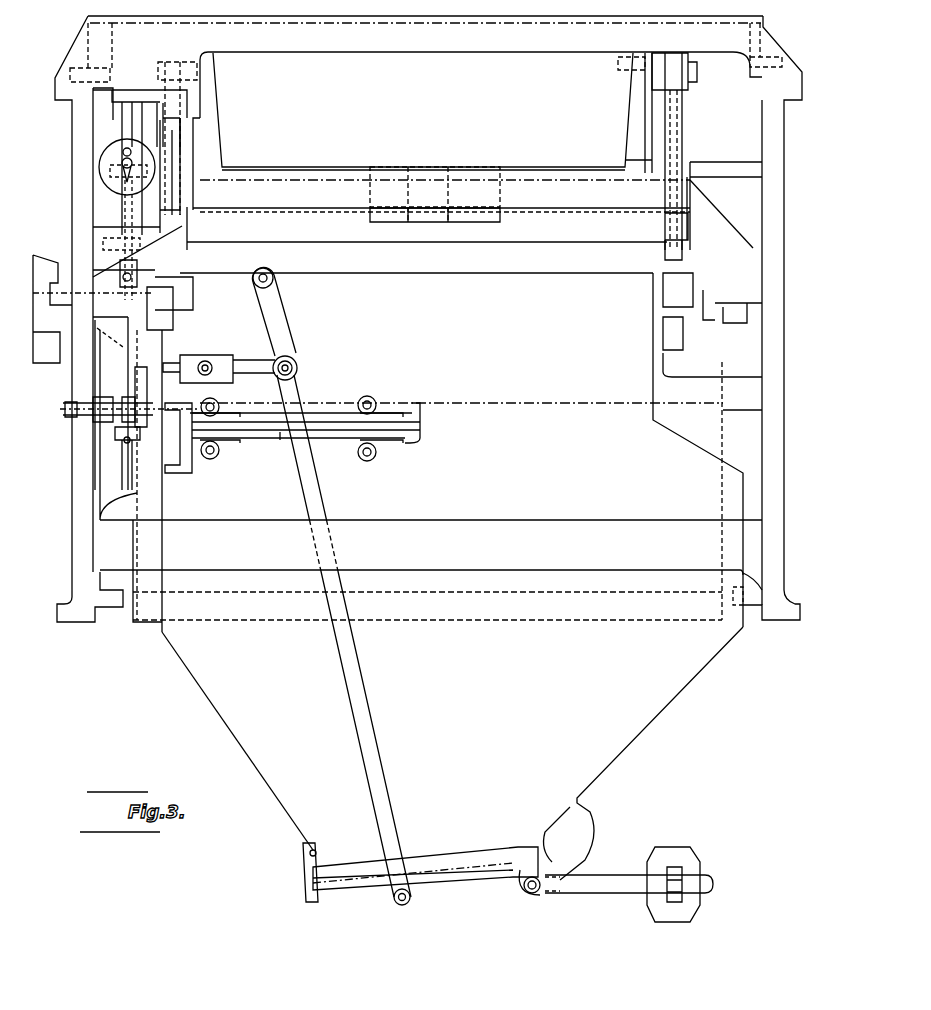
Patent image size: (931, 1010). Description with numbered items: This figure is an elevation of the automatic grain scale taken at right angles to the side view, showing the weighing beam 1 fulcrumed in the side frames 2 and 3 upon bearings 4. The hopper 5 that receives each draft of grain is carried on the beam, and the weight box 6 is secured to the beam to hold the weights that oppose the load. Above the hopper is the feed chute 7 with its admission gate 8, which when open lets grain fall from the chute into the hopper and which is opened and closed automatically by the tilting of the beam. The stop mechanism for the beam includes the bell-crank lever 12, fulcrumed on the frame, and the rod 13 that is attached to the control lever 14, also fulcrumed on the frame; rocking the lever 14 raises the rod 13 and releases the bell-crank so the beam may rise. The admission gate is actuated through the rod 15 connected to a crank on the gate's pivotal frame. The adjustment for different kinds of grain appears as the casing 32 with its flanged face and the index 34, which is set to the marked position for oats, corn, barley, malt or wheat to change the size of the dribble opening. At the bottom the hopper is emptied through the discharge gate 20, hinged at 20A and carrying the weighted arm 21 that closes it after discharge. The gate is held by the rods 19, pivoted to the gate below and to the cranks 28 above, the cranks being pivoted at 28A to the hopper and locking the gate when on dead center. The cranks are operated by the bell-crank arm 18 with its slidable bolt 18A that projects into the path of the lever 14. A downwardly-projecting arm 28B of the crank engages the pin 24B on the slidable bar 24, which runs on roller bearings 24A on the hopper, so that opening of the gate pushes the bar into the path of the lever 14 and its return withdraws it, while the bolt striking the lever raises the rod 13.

The weighing beam 1 is at (697, 267).
The side frame 2 is at (77, 493).
The side frame 3 is at (784, 563).
The bearings 4 is at (692, 355).
The hopper 5 is at (640, 724).
The weight box 6 is at (145, 610).
The feed chute 7 is at (432, 113).
The admission gate 8 is at (467, 194).
The bell-crank lever 12 is at (113, 128).
The rod 13 is at (125, 210).
The control lever 14 is at (148, 390).
The rod 15 is at (203, 100).
The bell-crank arm 18 is at (170, 368).
The slidable bolt 18A is at (210, 365).
The rods 19 is at (380, 750).
The discharge gate 20 is at (468, 873).
The hinge 20A is at (528, 895).
The weighted arm 21 is at (677, 857).
The slidable bar 24 is at (252, 440).
The roller bearings 24A is at (376, 454).
The pin 24B is at (285, 440).
The cranks 28 is at (273, 317).
The pivot 28A is at (297, 365).
The downwardly-projecting arm 28B is at (270, 395).
The casing 32 is at (108, 155).
The index 34 is at (123, 180).